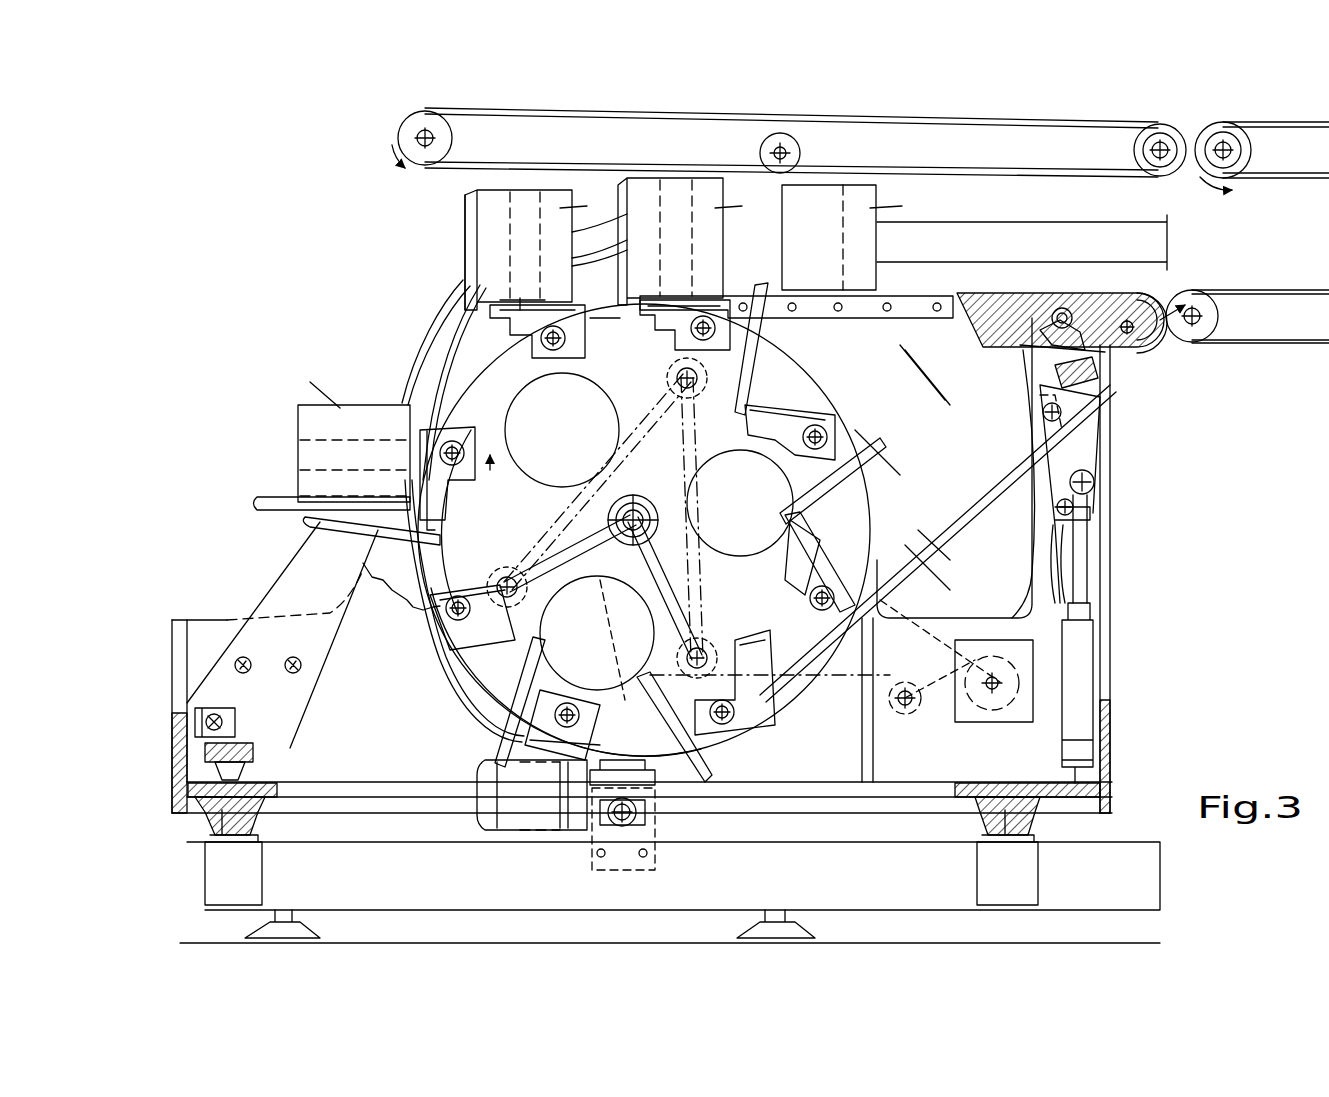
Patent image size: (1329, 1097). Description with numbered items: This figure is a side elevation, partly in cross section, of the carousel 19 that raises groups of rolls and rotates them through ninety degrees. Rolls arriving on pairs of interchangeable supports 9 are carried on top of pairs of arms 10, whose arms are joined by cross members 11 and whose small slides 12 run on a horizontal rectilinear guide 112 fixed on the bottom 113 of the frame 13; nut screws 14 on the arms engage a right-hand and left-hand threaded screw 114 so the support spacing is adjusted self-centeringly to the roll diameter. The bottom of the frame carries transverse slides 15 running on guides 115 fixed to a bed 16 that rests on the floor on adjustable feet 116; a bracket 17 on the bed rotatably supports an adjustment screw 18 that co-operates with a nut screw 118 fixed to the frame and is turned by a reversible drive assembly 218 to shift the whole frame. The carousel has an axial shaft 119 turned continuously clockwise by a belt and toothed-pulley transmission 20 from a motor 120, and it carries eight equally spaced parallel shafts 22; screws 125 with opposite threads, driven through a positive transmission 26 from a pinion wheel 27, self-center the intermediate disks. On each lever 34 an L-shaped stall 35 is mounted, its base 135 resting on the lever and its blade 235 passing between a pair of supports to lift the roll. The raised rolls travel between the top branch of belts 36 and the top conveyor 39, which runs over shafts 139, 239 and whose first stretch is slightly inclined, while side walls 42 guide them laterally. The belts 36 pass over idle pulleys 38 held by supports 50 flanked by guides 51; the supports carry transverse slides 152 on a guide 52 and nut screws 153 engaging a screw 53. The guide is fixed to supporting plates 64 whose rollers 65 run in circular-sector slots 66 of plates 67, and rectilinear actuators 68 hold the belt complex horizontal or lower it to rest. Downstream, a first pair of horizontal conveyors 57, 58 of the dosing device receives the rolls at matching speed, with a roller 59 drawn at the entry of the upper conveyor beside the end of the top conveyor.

The supports 9 is at (275, 495).
The arms 10 is at (292, 587).
The cross members 11 is at (302, 670).
The slides 12 is at (253, 770).
The frame 13 is at (168, 752).
The nut screws 14 is at (208, 705).
The slides 15 is at (250, 815).
The bed 16 is at (202, 880).
The bracket 17 is at (595, 815).
The adjustment screw 18 is at (612, 818).
The carousel 19 is at (440, 390).
The positive belt and toothed-pulley transmission 20 is at (930, 590).
The shafts 22 is at (455, 440).
The positive transmission of motion 26 is at (714, 515).
The toothed pulley or pinion wheel 27 is at (623, 570).
The levers 34 is at (575, 338).
The stall 35 is at (462, 240).
The belts 36 is at (912, 300).
The idle pulleys 38 is at (1162, 328).
The top conveyor 39 is at (1025, 172).
The side walls 42 is at (1068, 235).
The supports 50 is at (1018, 312).
The guides 51 is at (860, 320).
The guide 52 is at (1100, 388).
The screw 53 is at (1010, 328).
The horizontal conveyor 57 is at (1272, 118).
The horizontal conveyor 58 is at (1262, 295).
The deflection roller 59 is at (1195, 130).
The supporting plates 64 is at (1095, 452).
The rollers 65 is at (1048, 448).
The slots 66 is at (1068, 590).
The plates 67 is at (1035, 550).
The rectilinear actuators 68 is at (1078, 660).
The rectilinear guide 112 is at (217, 776).
The bottom 113 is at (282, 792).
The screw 114 is at (235, 720).
The guides 115 is at (621, 857).
The adjustable feet 116 is at (298, 928).
The nut screw 118 is at (636, 820).
The axial shaft 119 is at (640, 515).
The motor 120 is at (978, 725).
The screws 125 is at (680, 392).
The base 135 is at (520, 302).
The shaft 139 is at (412, 128).
The transverse slides 152 is at (1098, 368).
The nut screws 153 is at (1070, 312).
The drive assembly 218 is at (500, 822).
The blade 235 is at (478, 298).
The shaft 239 is at (1157, 128).